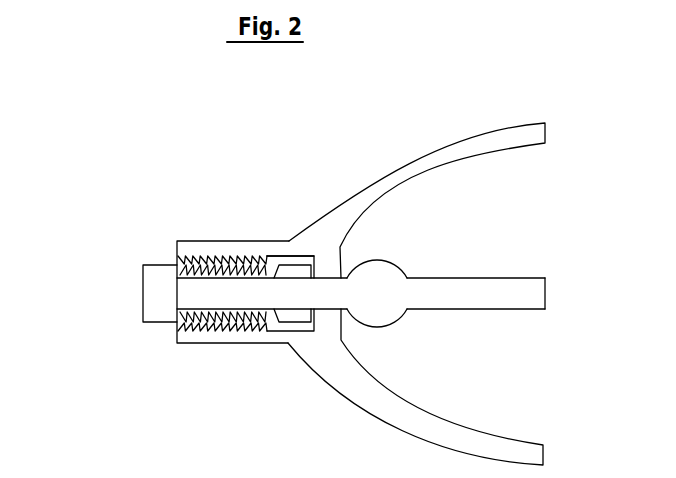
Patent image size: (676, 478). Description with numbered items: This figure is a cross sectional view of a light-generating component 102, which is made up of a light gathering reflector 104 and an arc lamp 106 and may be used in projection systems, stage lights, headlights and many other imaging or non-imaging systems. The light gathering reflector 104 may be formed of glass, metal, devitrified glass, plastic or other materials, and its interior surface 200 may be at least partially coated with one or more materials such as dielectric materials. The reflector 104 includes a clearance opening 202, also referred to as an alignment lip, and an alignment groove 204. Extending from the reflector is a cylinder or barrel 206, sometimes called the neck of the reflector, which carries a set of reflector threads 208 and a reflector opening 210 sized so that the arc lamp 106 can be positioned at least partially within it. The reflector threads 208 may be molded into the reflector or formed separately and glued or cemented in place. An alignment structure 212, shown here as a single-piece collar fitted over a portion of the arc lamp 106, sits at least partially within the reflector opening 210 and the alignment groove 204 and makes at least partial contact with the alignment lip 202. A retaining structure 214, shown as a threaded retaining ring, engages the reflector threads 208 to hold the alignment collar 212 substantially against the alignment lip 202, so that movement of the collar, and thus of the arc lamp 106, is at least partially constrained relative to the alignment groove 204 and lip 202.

The light-generating component 102 is at (122, 175).
The light gathering reflector 104 is at (527, 113).
The arc lamp 106 is at (545, 270).
The interior surface 200 is at (527, 155).
The clearance opening 202 is at (357, 249).
The alignment groove 204 is at (299, 242).
The cylinder or barrel 206 is at (165, 236).
The reflector threads 208 is at (214, 245).
The reflector opening 210 is at (143, 293).
The alignment structure 212 is at (289, 264).
The retaining structure 214 is at (166, 259).